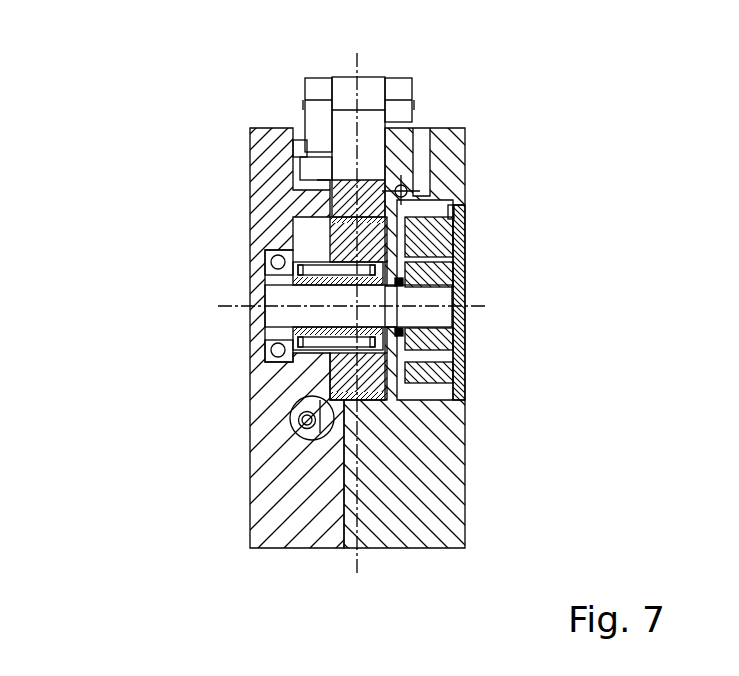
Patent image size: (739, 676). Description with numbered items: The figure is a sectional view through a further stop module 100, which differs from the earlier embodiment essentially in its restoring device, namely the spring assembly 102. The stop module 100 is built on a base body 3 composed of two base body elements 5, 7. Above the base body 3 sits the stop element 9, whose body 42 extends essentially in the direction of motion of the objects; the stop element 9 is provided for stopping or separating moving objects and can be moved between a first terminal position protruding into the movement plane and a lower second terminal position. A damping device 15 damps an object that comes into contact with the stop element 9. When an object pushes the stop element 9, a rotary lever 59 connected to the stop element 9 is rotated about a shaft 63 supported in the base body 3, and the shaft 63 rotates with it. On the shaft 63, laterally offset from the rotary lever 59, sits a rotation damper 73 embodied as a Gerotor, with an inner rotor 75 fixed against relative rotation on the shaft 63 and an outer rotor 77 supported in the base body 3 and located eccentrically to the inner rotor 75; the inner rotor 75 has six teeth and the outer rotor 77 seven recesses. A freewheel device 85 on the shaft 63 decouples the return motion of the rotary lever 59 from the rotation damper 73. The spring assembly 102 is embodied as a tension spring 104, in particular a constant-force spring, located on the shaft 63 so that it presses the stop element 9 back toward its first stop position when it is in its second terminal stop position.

The stop module 100 is at (168, 114).
The base body 3 is at (360, 376).
The base body element 5 is at (295, 492).
The base body element 7 is at (439, 338).
The stop element 9 is at (383, 77).
The damping device 15 is at (430, 217).
The body 42 is at (348, 87).
The rotary lever 59 is at (330, 193).
The shaft 63 is at (297, 317).
The rotation damper 73 is at (457, 345).
The inner rotor 75 is at (450, 273).
The outer rotor 77 is at (450, 238).
The freewheel device 85 is at (277, 352).
The spring assembly 102 is at (326, 230).
The tension spring 104 is at (330, 375).